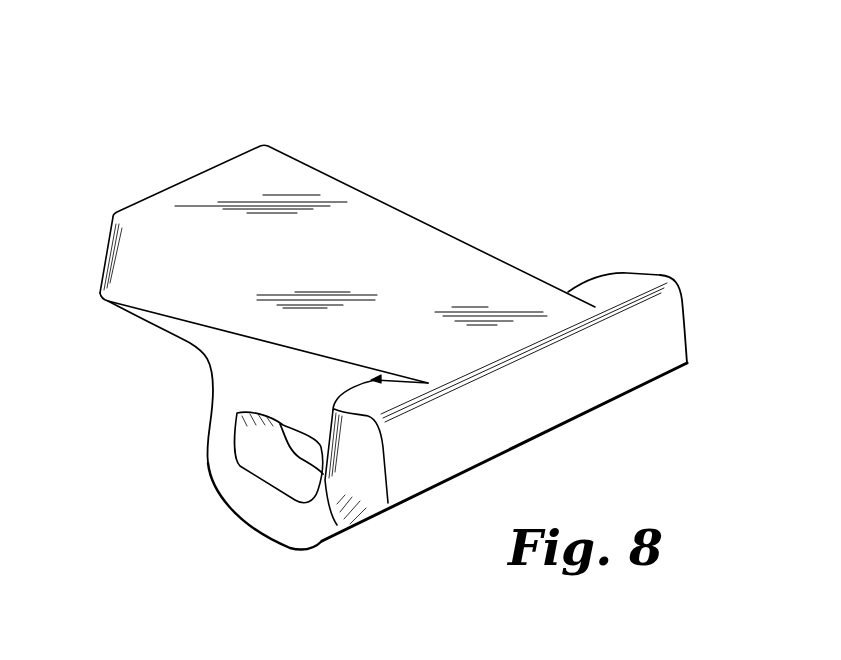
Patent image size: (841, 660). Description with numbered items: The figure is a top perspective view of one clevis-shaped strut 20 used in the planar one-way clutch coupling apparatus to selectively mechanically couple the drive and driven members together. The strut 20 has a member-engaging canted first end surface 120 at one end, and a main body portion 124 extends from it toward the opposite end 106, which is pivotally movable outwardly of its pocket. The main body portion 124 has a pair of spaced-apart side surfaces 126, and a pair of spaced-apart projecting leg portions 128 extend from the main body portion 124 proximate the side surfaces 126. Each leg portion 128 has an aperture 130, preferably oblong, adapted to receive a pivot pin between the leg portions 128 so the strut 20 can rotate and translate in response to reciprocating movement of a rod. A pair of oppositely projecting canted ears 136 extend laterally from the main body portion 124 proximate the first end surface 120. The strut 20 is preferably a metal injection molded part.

The strut 20 is at (452, 228).
The end 106 is at (273, 147).
The main body portion 124 is at (360, 248).
The first end surface 120 is at (675, 333).
The canted ears 136 is at (628, 277).
The side surfaces 126 is at (170, 303).
The leg portions 128 is at (267, 520).
The aperture 130 is at (290, 473).